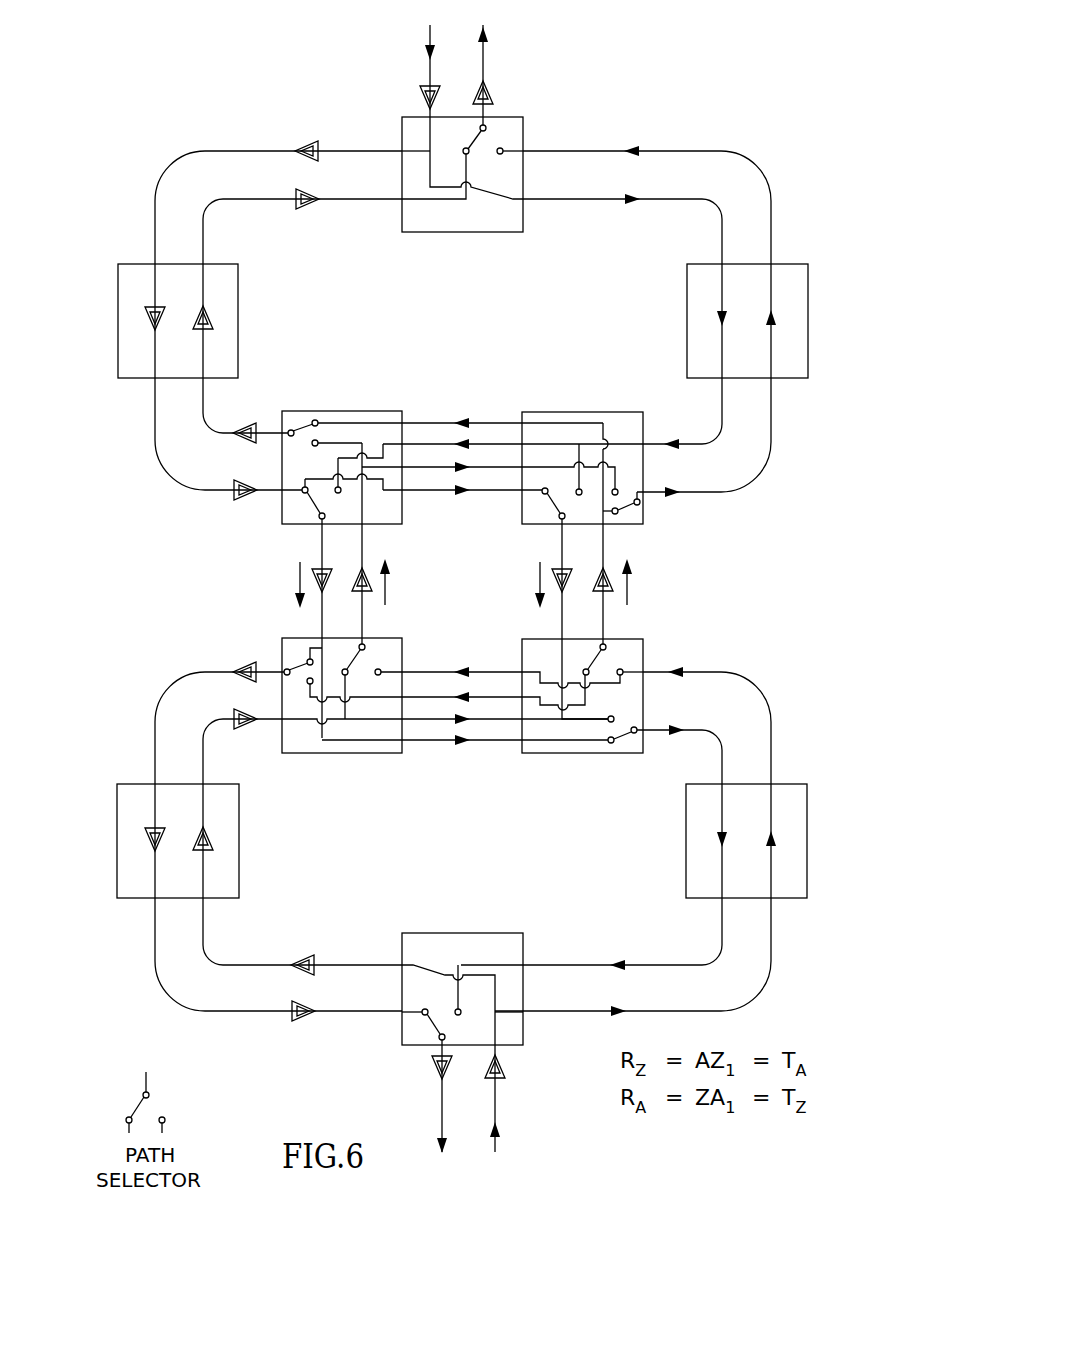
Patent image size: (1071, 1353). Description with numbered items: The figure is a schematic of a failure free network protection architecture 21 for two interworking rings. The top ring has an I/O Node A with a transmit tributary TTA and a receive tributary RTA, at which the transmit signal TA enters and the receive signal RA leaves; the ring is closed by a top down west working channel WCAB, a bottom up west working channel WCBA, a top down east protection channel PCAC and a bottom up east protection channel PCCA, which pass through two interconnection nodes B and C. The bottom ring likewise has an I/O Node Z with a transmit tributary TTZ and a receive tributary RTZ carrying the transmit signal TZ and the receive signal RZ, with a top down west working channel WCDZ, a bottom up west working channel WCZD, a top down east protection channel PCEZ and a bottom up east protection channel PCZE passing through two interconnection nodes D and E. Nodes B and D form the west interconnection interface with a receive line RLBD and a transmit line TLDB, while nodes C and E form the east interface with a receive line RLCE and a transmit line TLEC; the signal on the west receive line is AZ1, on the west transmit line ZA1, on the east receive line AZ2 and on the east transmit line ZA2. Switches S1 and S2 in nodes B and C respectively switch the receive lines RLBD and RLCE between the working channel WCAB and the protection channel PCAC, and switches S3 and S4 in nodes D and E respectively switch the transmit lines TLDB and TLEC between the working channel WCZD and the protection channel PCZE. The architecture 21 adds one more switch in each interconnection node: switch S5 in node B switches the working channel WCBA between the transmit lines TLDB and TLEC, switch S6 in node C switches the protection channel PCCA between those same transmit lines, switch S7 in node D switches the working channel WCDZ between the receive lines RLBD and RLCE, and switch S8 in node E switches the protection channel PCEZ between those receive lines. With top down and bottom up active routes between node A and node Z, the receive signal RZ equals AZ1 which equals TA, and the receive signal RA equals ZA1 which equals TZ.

The failure free network protection architecture 21 is at (700, 68).
The I/O Node A is at (508, 125).
The interconnection node B is at (367, 413).
The interconnection node C is at (588, 413).
The interconnection node D is at (338, 753).
The interconnection node E is at (556, 753).
The I/O Node Z is at (413, 1040).
The switch S1 is at (303, 509).
The switch S2 is at (562, 486).
The switch S3 is at (364, 682).
The switch S4 is at (609, 663).
The additional switch S5 is at (322, 406).
The additional switch S6 is at (635, 514).
The additional switch S7 is at (290, 655).
The additional switch S8 is at (608, 734).
The transmit signal TA is at (431, 58).
The receive signal RA is at (482, 58).
The transmit tributary TTA is at (428, 117).
The receive tributary RTA is at (485, 117).
The top down west working channel WCAB is at (155, 228).
The bottom up west working channel WCBA is at (205, 237).
The bottom up east protection channel PCCA is at (772, 233).
The top down east protection channel PCAC is at (722, 237).
The receive line RLBD is at (320, 548).
The transmit line TLDB is at (363, 550).
The receive line RLCE is at (562, 625).
The transmit line TLEC is at (604, 626).
The signal along the west interconnection interface's receive line AZ1 is at (272, 586).
The signal along the west interconnection interface's transmit line ZA1 is at (407, 584).
The signal along the east interconnection interface's receive line AZ2 is at (514, 586).
The signal along the east interconnection interface's transmit line ZA2 is at (651, 584).
The top down west working channel WCDZ is at (156, 727).
The bottom up west working channel WCZD is at (204, 762).
The bottom up east protection channel PCZE is at (772, 746).
The top down east protection channel PCEZ is at (720, 752).
The receive tributary RTZ is at (435, 1048).
The transmit tributary TTZ is at (503, 1047).
The receive signal RZ is at (449, 1154).
The transmit signal TZ is at (498, 1154).